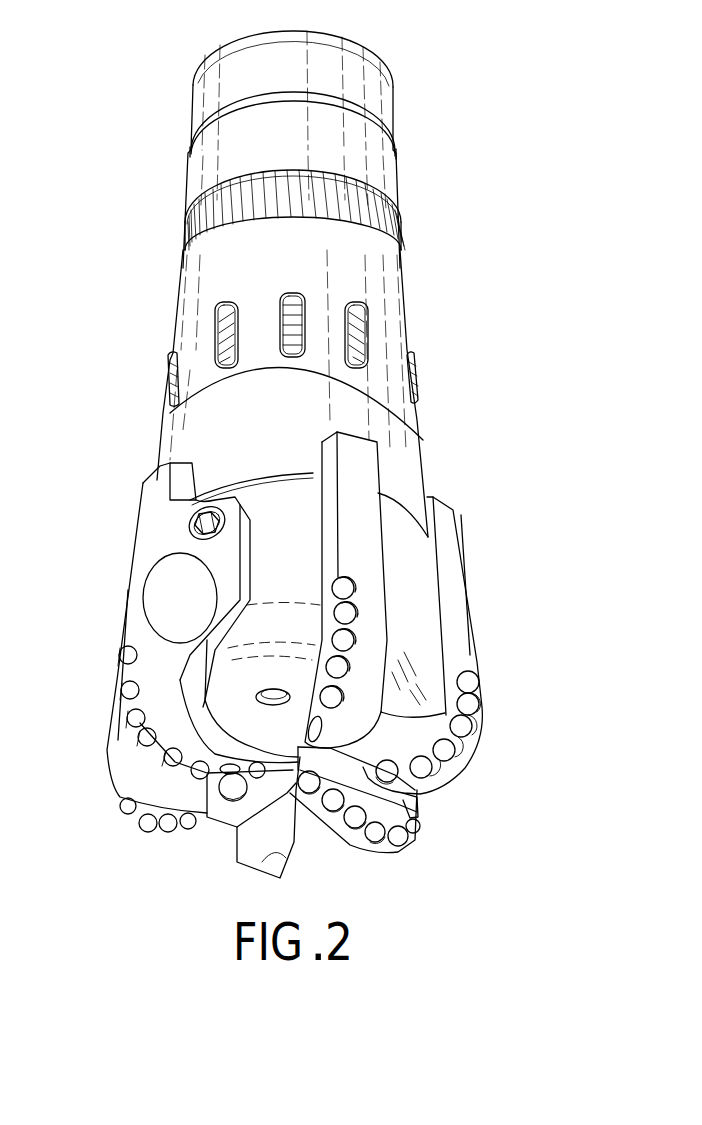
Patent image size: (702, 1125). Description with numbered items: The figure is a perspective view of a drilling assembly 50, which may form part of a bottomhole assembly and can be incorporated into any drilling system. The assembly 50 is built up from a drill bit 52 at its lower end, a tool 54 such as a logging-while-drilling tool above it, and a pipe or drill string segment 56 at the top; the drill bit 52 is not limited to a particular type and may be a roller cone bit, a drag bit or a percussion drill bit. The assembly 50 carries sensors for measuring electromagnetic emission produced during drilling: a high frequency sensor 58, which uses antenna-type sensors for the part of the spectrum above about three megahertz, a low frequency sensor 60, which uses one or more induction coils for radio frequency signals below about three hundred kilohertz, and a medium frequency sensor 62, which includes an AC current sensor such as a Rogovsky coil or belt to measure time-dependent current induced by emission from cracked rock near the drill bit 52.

The drilling assembly 50 is at (122, 48).
The drill bit 52 is at (490, 565).
The tool 54 is at (435, 310).
The drill string segment 56 is at (412, 103).
The high frequency sensor 58 is at (115, 606).
The low frequency sensor 60 is at (148, 392).
The medium frequency sensor 62 is at (170, 245).